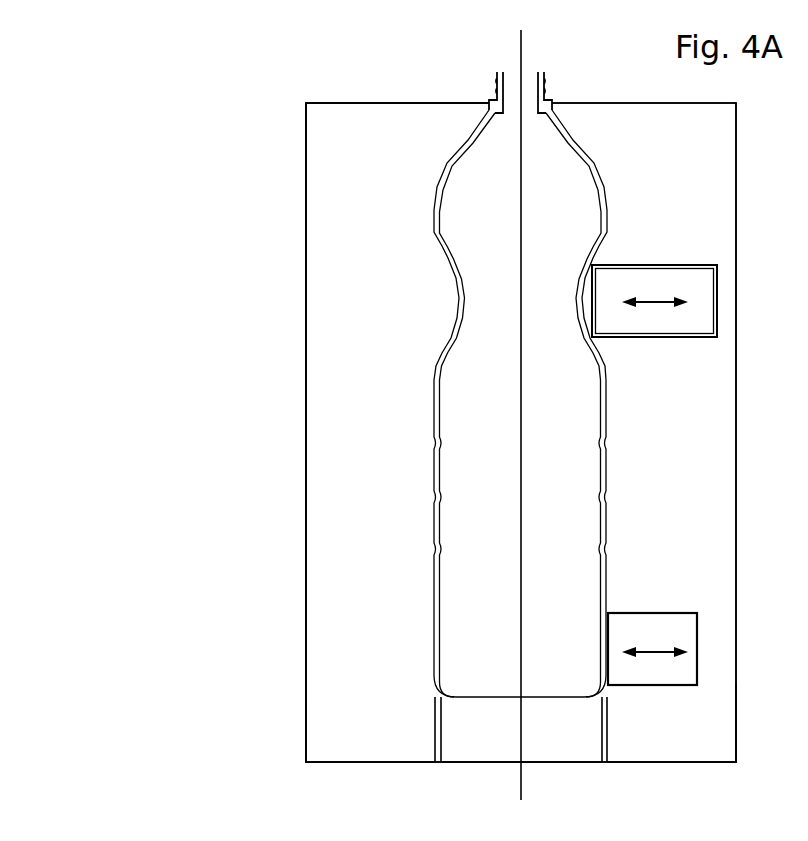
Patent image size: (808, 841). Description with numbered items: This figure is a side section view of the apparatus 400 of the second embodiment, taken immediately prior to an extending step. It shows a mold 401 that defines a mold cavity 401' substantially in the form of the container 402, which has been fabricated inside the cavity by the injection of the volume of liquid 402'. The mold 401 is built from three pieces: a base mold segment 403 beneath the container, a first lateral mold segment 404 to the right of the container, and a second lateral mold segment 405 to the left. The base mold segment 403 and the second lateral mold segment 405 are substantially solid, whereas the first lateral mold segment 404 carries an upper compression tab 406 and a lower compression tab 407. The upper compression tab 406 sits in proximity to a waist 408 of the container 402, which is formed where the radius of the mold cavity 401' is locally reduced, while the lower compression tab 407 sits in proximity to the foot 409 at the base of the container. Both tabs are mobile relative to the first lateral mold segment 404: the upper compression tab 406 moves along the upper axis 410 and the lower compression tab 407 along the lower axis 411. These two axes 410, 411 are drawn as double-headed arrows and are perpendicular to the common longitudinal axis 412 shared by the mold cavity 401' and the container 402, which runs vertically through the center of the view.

The apparatus 400 is at (192, 247).
The mold 401 is at (455, 432).
The mold cavity 401' is at (397, 404).
The container 402 is at (579, 370).
The volume of liquid 402' is at (380, 384).
The base mold segment 403 is at (470, 750).
The first lateral mold segment 404 is at (662, 745).
The second lateral mold segment 405 is at (372, 748).
The upper compression tab 406 is at (683, 265).
The lower compression tab 407 is at (687, 675).
The waist 408 is at (597, 265).
The foot 409 is at (608, 690).
The upper axis 410 is at (657, 303).
The lower axis 411 is at (658, 655).
The common longitudinal axis 412 is at (521, 790).